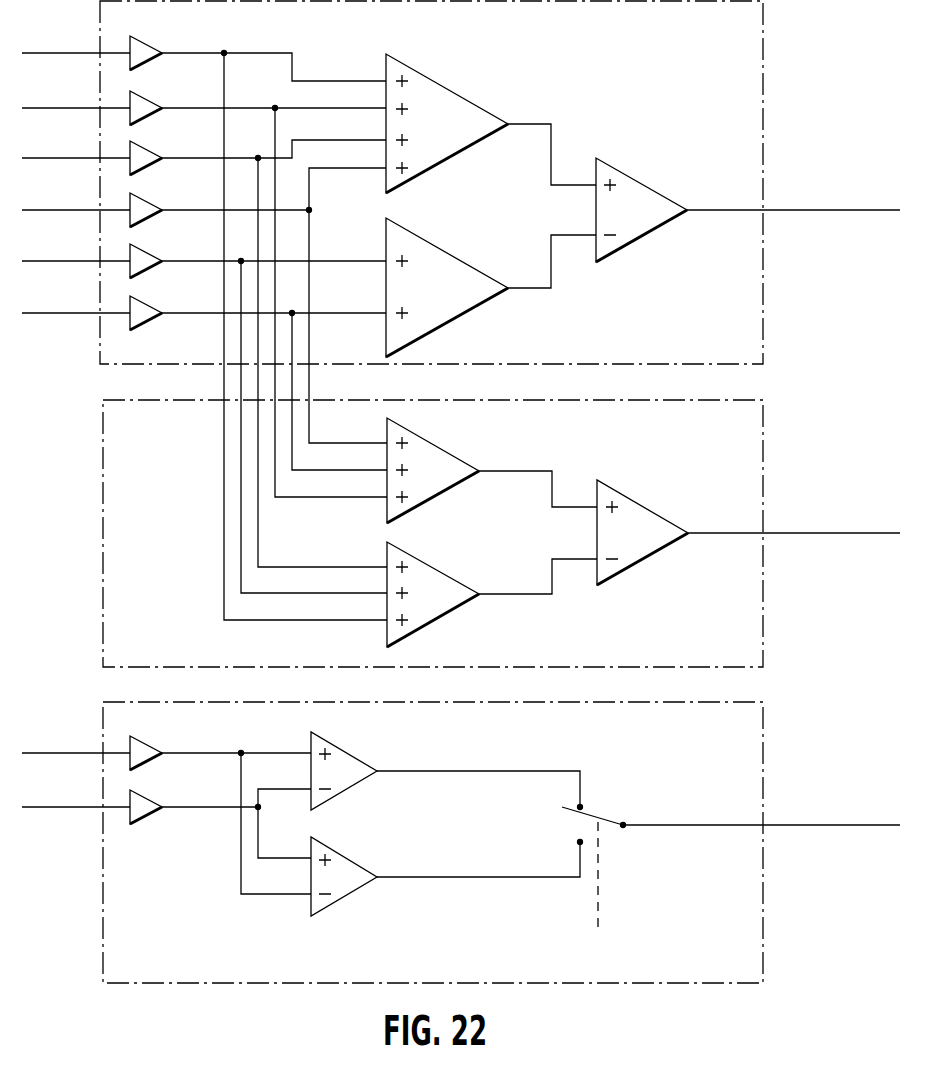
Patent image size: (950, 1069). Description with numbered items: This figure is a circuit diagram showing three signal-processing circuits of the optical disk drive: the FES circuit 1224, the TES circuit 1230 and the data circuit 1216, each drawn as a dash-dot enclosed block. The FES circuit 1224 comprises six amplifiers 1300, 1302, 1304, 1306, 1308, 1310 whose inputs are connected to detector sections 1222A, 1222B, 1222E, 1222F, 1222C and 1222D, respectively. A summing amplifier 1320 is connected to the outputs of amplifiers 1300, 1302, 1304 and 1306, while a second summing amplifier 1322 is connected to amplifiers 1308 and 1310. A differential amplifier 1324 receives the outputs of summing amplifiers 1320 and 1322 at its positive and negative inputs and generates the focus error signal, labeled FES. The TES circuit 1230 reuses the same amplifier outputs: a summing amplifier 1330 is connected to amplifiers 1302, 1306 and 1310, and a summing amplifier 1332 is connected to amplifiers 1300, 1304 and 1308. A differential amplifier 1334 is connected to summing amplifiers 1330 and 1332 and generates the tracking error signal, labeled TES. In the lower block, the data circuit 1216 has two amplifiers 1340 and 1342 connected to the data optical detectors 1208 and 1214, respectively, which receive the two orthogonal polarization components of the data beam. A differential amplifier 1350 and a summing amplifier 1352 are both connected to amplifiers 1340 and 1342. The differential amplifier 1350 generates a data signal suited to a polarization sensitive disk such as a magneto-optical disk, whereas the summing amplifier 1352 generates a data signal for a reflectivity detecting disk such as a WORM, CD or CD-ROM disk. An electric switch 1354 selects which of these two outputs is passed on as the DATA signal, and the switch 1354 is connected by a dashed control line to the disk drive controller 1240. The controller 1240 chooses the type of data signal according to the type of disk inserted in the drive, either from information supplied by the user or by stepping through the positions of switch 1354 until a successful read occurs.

The detector section 1222A is at (86, 53).
The detector section 1222B is at (86, 108).
The detector section 1222C is at (86, 261).
The detector section 1222D is at (86, 313).
The detector section 1222E is at (86, 158).
The detector section 1222F is at (86, 210).
The amplifier 1300 is at (158, 48).
The amplifier 1302 is at (158, 102).
The amplifier 1304 is at (158, 153).
The amplifier 1306 is at (158, 205).
The amplifier 1308 is at (158, 256).
The amplifier 1310 is at (158, 308).
The summing amplifier 1320 is at (445, 86).
The summing amplifier 1322 is at (445, 250).
The differential amplifier 1324 is at (645, 178).
The FES circuit 1224 is at (762, 90).
The summing amplifier 1330 is at (446, 448).
The summing amplifier 1332 is at (446, 571).
The differential amplifier 1334 is at (655, 511).
The TES circuit 1230 is at (763, 470).
The data optical detector 1208 is at (86, 753).
The data optical detector 1214 is at (86, 807).
The amplifier 1340 is at (158, 748).
The amplifier 1342 is at (158, 801).
The differential amplifier 1350 is at (359, 757).
The summing amplifier 1352 is at (359, 863).
The electric switch 1354 is at (602, 812).
The data circuit 1216 is at (763, 760).
The disk drive controller 1240 is at (608, 892).